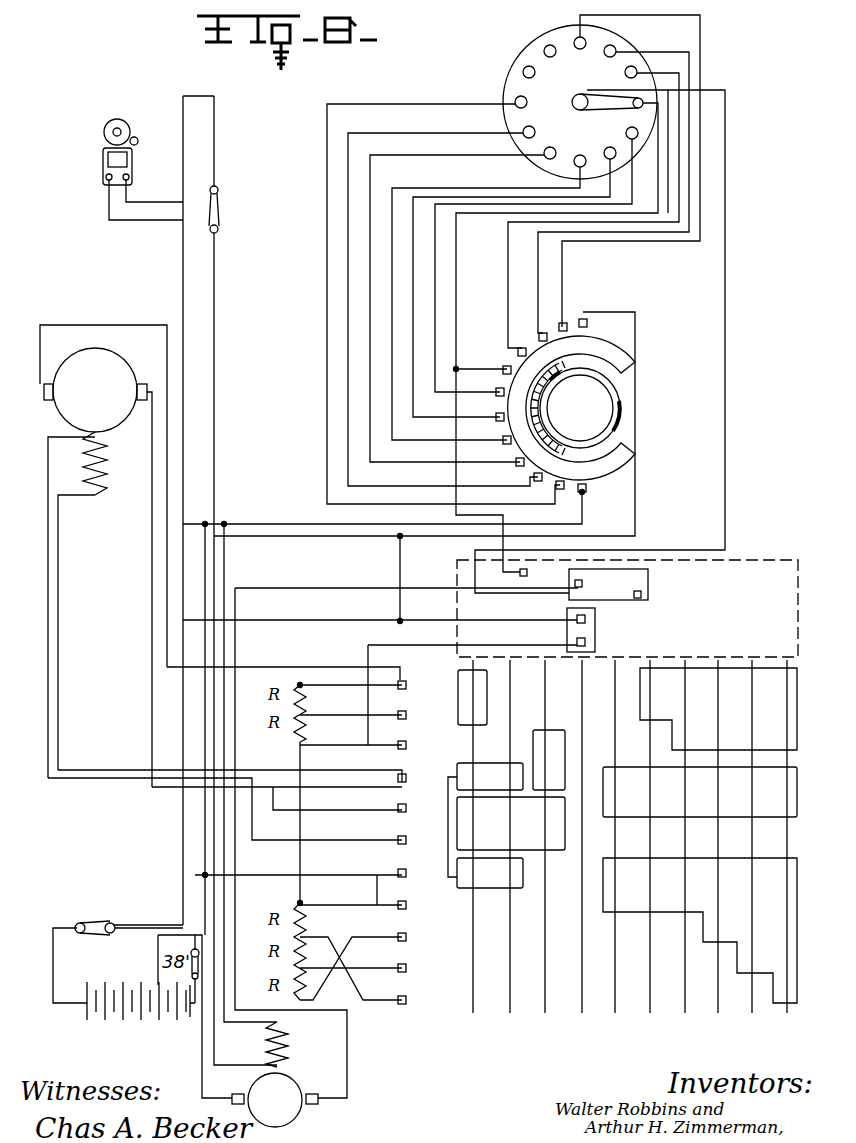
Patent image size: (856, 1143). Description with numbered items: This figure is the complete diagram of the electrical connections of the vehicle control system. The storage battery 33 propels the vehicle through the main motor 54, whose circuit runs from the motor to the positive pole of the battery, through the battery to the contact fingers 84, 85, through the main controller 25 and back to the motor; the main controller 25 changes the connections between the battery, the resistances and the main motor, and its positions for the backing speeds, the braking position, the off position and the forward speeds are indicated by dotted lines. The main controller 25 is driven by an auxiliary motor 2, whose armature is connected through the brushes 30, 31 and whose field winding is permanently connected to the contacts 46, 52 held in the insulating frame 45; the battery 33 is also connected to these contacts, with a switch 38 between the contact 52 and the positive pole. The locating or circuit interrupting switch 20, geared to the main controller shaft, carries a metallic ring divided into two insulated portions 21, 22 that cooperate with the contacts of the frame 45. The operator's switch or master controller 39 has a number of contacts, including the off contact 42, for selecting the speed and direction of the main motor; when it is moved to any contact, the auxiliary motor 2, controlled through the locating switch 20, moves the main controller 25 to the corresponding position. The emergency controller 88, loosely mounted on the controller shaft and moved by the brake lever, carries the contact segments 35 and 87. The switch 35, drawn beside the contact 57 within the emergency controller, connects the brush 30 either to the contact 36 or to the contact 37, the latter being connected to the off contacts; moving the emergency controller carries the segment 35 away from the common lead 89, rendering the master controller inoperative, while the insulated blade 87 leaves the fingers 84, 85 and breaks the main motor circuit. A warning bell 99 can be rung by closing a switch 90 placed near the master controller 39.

The auxiliary motor 2 is at (275, 1100).
The locating or circuit interrupting switch 20 is at (580, 408).
The conducting half-ring 21 is at (612, 447).
The ring portion 22 is at (621, 397).
The main controller 25 is at (767, 833).
The brush 30 is at (310, 1093).
The brush 31 is at (244, 1093).
The storage battery 33 is at (115, 984).
The switch (contact segment) 35 is at (649, 588).
The contact 36 is at (640, 598).
The contact 37 is at (528, 573).
The switch 38 is at (90, 922).
The operator's switch or master controller 39 is at (615, 112).
The off contact 42 is at (641, 100).
The insulating frame or segment 45 is at (637, 349).
The contact 46 is at (586, 495).
The contact 52 is at (586, 320).
The main motor 54 is at (103, 556).
The null 57 is at (594, 583).
The contact finger 84 is at (577, 642).
The contact finger 85 is at (577, 617).
The contact plate (blade) 87 is at (585, 630).
The emergency controller 88 is at (627, 608).
The common lead 89 is at (727, 458).
The switch 90 is at (222, 210).
The warning bell 99 is at (132, 173).